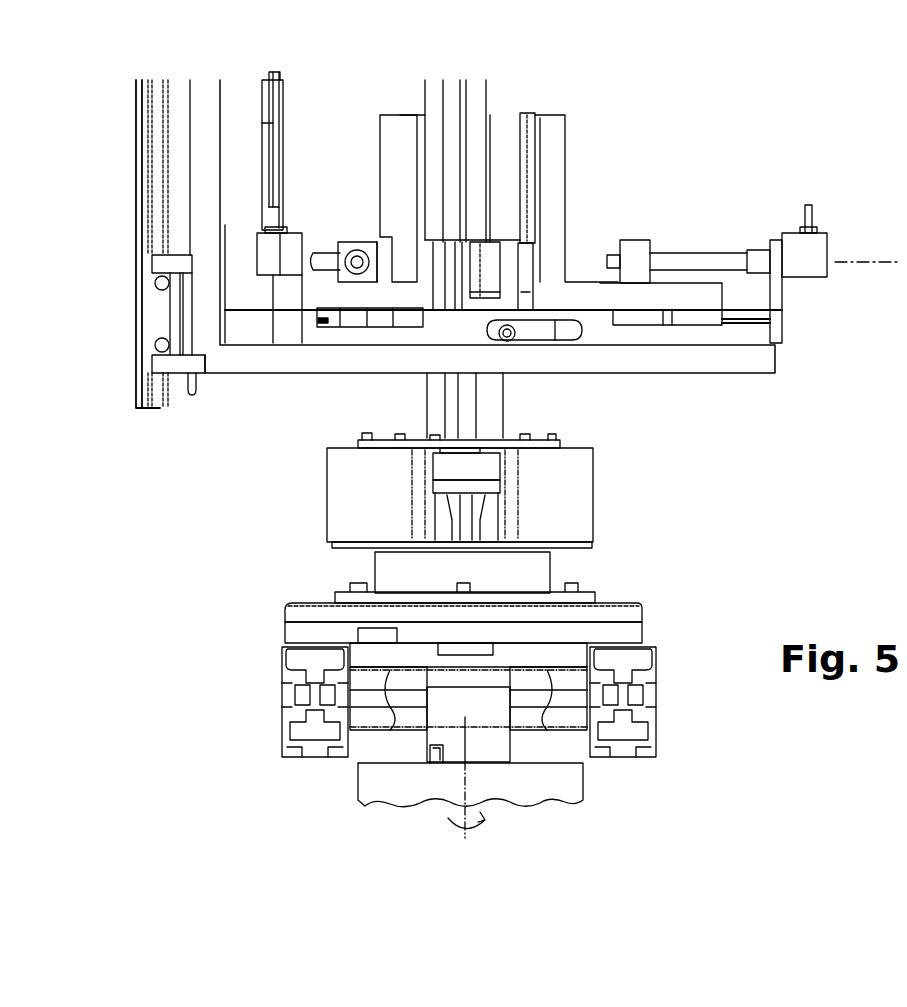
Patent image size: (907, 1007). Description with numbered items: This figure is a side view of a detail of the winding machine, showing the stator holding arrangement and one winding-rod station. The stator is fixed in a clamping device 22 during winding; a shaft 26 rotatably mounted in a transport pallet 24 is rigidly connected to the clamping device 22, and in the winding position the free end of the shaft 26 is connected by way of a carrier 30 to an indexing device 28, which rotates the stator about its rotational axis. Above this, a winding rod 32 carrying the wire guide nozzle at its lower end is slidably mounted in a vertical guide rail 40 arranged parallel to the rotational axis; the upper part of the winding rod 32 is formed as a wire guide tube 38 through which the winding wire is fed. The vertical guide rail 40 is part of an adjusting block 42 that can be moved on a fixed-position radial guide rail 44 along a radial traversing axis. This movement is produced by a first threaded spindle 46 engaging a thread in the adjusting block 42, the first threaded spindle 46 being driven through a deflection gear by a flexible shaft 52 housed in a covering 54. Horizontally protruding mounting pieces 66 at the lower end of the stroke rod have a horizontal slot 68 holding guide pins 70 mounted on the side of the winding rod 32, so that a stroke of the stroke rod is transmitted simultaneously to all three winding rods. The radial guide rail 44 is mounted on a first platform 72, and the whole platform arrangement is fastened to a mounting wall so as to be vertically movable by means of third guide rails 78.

The clamping device 22 is at (587, 498).
The transport pallet 24 is at (645, 622).
The shaft 26 is at (497, 733).
The indexing device 28 is at (405, 792).
The carrier 30 is at (433, 752).
The winding rod 32 is at (487, 270).
The wire guide tube 38 is at (478, 113).
The vertical guide rail 40 is at (530, 140).
The adjusting block 42 is at (555, 250).
The radial guide rail 44 is at (755, 316).
The first threaded spindle 46 is at (723, 260).
The flexible shaft 52 is at (272, 73).
The covering 54 is at (280, 155).
The mounting pieces 66 is at (583, 327).
The slot 68 is at (567, 330).
The guide pins 70 is at (510, 333).
The first platform 72 is at (767, 360).
The third guide rails 78 is at (148, 208).